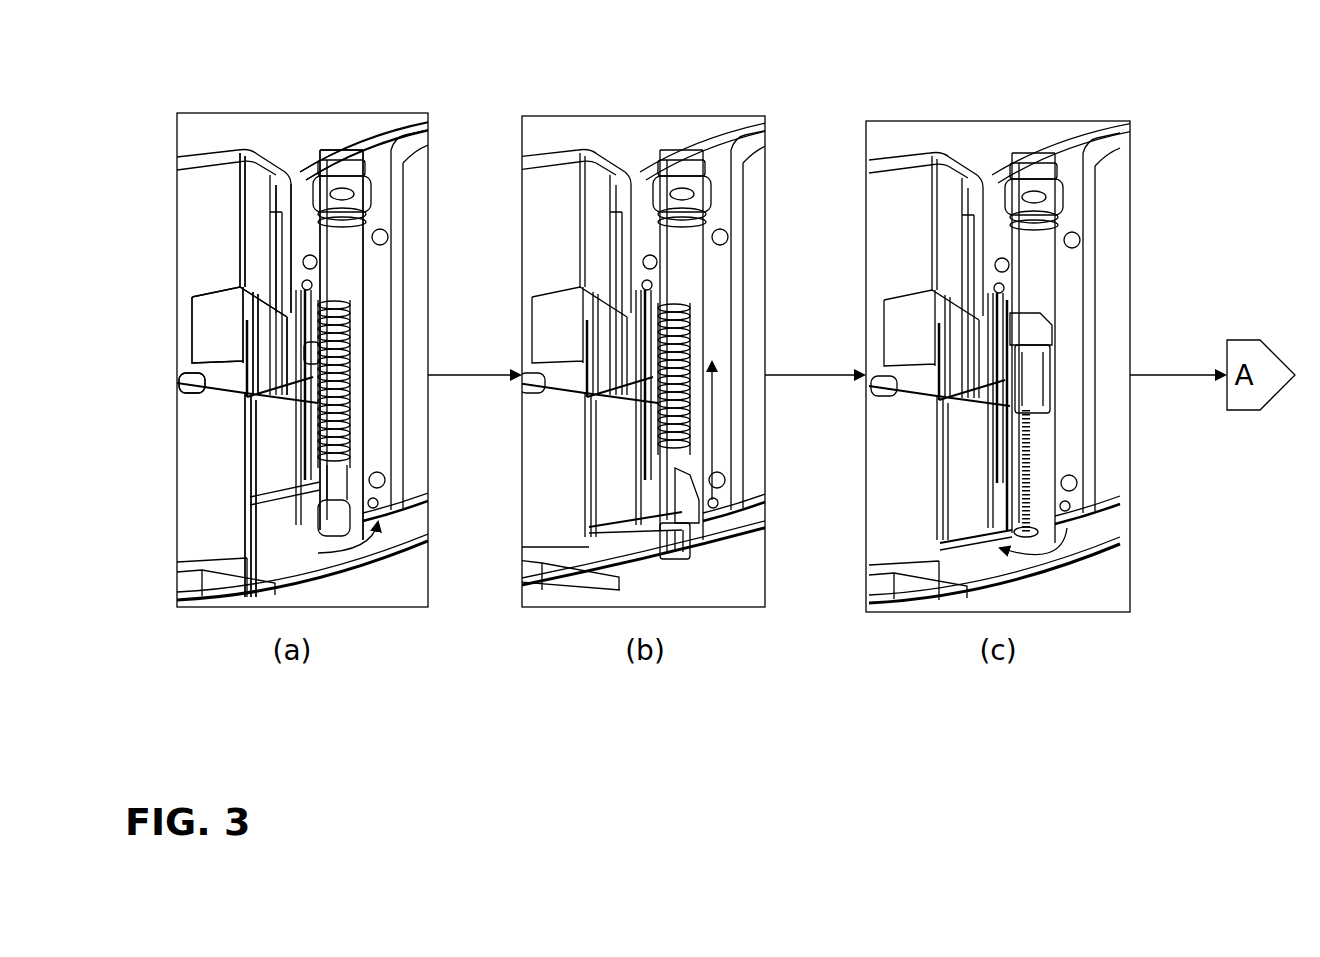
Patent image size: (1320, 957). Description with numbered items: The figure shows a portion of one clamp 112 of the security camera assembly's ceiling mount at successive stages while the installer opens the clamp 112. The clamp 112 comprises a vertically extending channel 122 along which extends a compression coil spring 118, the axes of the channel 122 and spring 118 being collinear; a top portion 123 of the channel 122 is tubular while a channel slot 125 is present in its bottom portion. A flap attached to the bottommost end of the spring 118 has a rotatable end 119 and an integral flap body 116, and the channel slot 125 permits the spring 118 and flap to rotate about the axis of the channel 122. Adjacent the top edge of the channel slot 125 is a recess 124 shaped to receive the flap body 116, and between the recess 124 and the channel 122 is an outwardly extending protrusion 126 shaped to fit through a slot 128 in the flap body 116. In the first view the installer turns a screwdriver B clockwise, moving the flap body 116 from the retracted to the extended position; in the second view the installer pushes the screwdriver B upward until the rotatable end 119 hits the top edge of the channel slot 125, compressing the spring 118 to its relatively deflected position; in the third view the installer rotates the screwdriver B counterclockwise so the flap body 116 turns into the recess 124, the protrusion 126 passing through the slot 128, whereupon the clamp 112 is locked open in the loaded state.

The clamp 112 is at (338, 133).
The flap body 116 is at (272, 527).
The compression coil spring 118 is at (240, 398).
The rotatable end 119 is at (312, 476).
The channel 122 is at (306, 221).
The top portion of the channel 123 is at (338, 245).
The recess 124 is at (283, 337).
The channel slot 125 is at (313, 418).
The protrusion 126 is at (250, 355).
The slot 128 is at (322, 523).
The screwdriver B is at (1022, 476).